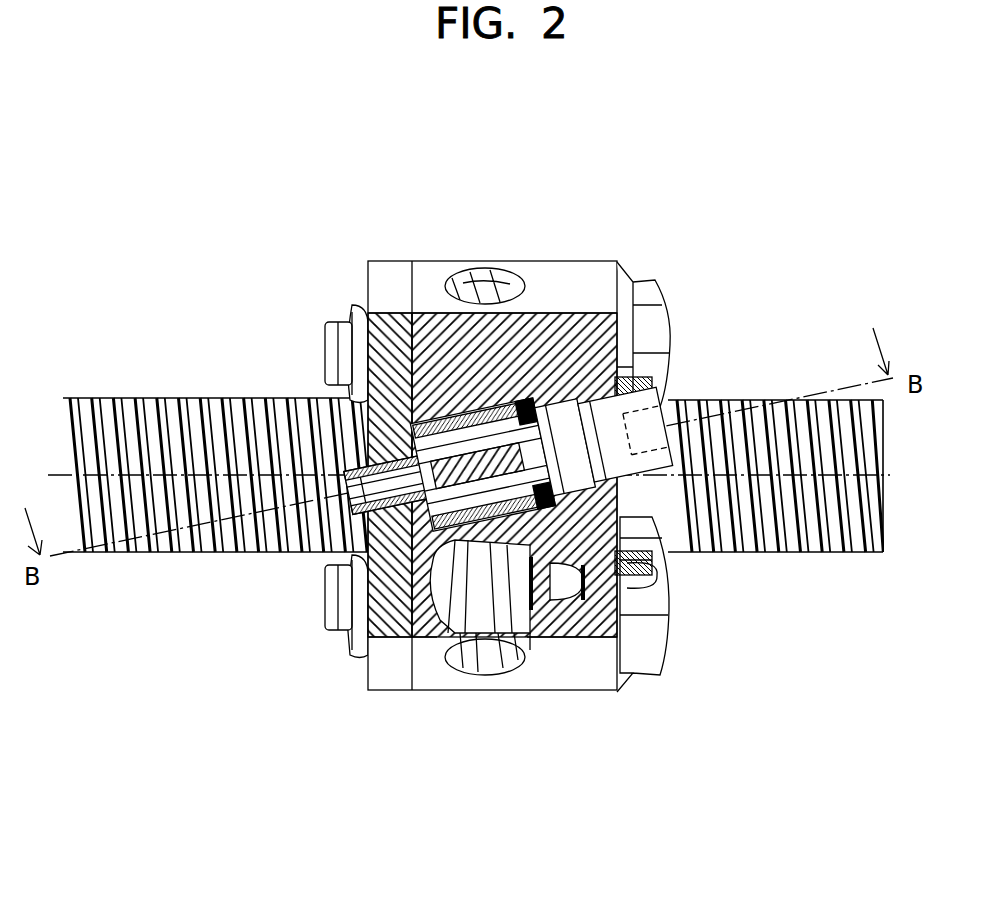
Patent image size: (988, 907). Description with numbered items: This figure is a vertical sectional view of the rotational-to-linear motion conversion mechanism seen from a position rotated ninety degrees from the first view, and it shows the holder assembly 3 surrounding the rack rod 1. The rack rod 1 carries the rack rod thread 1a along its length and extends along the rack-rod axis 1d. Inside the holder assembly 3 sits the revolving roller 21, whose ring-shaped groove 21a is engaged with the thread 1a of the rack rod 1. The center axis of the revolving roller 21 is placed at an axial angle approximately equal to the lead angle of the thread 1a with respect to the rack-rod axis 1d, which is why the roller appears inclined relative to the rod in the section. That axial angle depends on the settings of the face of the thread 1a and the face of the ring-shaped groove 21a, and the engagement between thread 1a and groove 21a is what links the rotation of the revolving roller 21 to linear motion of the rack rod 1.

The rack rod 1 is at (248, 555).
The rack rod thread 1a is at (256, 393).
The rack-rod axis 1d is at (800, 553).
The holder assembly 3 is at (633, 262).
The revolving roller 21 is at (523, 653).
The ring-shaped groove 21a is at (833, 390).